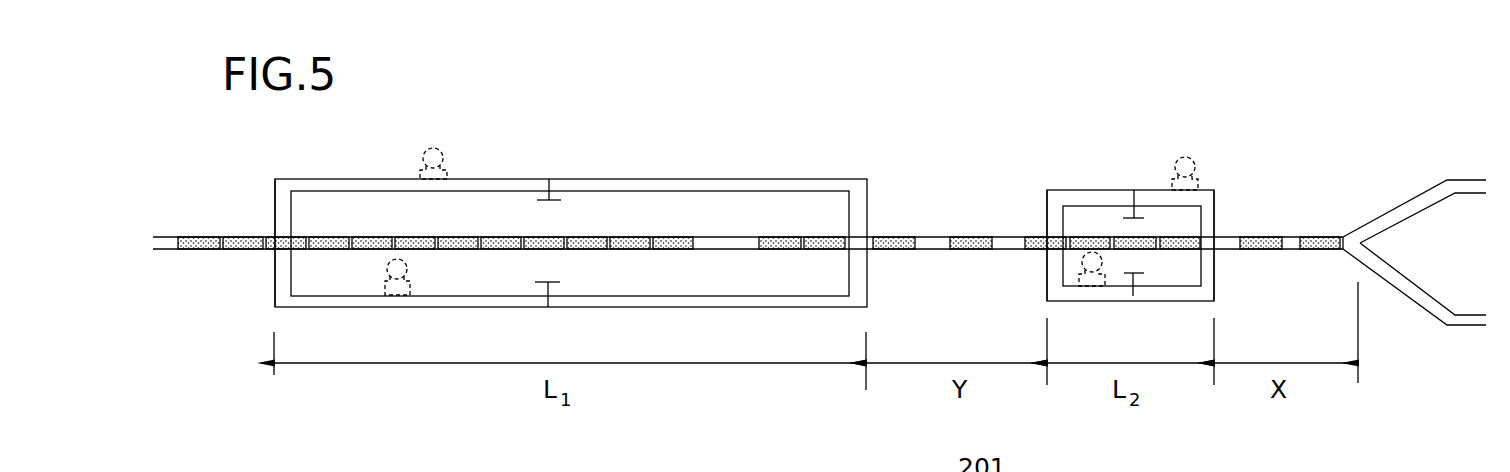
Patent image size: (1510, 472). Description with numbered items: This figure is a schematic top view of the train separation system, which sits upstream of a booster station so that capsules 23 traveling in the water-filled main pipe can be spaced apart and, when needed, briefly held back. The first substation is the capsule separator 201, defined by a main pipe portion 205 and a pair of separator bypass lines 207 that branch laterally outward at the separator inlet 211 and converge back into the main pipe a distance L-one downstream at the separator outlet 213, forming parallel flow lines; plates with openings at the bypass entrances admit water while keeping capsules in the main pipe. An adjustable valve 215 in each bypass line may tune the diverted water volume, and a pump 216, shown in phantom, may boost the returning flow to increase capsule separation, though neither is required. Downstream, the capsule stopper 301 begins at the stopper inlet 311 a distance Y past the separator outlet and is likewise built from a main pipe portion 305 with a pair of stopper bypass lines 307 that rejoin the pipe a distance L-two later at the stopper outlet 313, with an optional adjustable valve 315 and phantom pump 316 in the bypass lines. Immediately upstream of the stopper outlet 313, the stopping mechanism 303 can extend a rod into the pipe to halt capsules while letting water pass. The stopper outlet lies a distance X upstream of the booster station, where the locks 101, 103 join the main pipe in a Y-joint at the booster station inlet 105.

The capsules 23 is at (274, 251).
The lock 101 is at (1484, 180).
The lock 103 is at (1485, 330).
The inlet of the booster station 105 is at (1327, 237).
The capsule separator 201 is at (384, 147).
The main pipe portion of the separator 205 is at (482, 237).
The separator bypass lines 207 is at (604, 179).
The separator inlet 211 is at (274, 236).
The separator outlet 213 is at (870, 237).
The adjustable valve 215 is at (557, 203).
The pump 216 is at (440, 150).
The capsule stopper 301 is at (1232, 155).
The stopping mechanism 303 is at (1205, 207).
The main pipe portion of the stopper 305 is at (1143, 237).
The stopper bypass lines 307 is at (1100, 190).
The stopper inlet 311 is at (1047, 250).
The stopper outlet 313 is at (1215, 237).
The adjustable valve 315 is at (1143, 218).
The pump 316 is at (1195, 162).